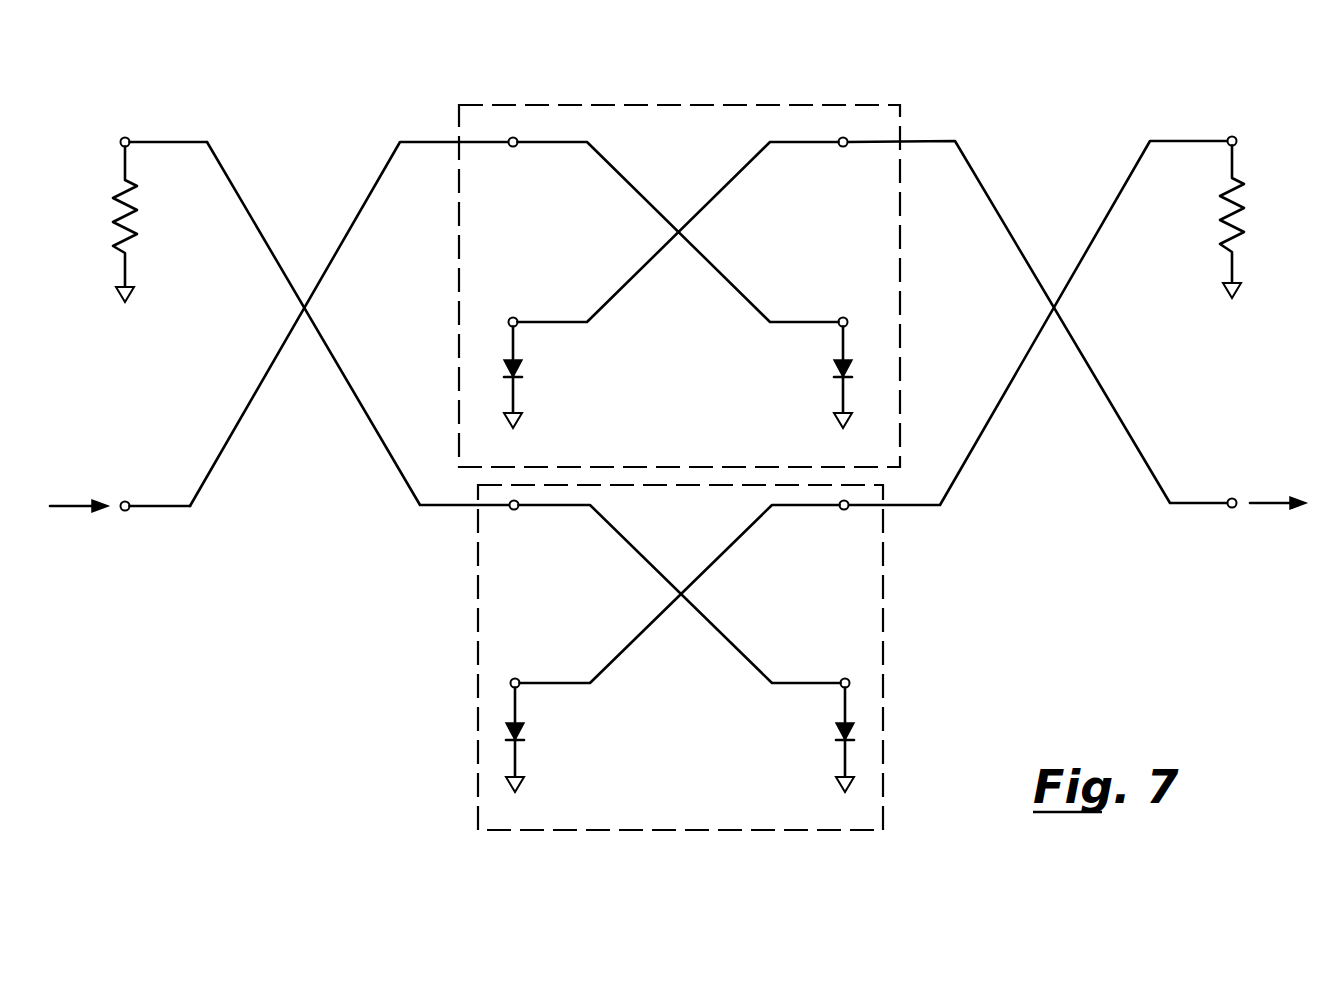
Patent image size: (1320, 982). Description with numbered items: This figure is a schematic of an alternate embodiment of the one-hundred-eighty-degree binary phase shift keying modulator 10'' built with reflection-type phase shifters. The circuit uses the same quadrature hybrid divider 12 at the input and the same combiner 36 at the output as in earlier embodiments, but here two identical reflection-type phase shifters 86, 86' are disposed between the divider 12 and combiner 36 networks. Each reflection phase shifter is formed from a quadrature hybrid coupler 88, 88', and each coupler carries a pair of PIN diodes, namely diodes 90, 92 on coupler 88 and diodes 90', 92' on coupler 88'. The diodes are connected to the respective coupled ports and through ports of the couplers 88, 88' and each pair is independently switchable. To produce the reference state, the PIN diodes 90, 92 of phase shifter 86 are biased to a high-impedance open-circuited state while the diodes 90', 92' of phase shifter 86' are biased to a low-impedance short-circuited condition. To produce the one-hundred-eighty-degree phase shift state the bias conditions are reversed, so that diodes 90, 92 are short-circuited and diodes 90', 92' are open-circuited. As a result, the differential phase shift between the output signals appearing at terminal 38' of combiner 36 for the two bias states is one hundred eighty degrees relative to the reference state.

The limiter circuit (third embodiment) 10'' is at (678, 449).
The quadrature hybrid divider 12 is at (298, 153).
The combiner 36 is at (1047, 150).
The terminal 38' is at (1261, 533).
The reflection-type phase shifter 86 is at (679, 267).
The reflection-type phase shifter 86' is at (718, 657).
The quadrature hybrid coupler 88 is at (678, 232).
The quadrature hybrid coupler 88' is at (680, 594).
The PIN diode 90 is at (547, 378).
The PIN diode 92 is at (809, 378).
The PIN diode 90' is at (552, 740).
The PIN diode 92' is at (808, 740).